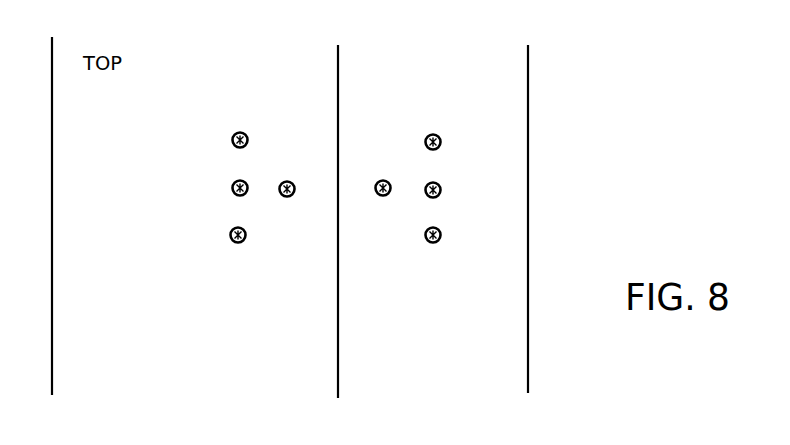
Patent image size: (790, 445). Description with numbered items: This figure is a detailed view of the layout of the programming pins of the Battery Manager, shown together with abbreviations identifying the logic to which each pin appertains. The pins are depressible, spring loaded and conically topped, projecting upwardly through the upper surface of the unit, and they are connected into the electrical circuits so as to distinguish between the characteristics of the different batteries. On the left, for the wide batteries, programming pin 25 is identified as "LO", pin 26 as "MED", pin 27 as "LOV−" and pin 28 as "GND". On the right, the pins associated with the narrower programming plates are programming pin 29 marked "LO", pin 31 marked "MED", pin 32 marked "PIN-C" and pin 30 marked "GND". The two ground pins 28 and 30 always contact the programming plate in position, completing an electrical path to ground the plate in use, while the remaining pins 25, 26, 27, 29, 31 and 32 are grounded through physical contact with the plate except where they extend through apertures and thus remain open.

The programming pin 25 is at (247, 134).
The programming pin 26 is at (233, 182).
The programming pin 27 is at (244, 231).
The programming pin 28 is at (293, 194).
The programming pin 29 is at (440, 135).
The programming pin 30 is at (388, 194).
The programming pin 31 is at (439, 184).
The programming pin 32 is at (431, 243).